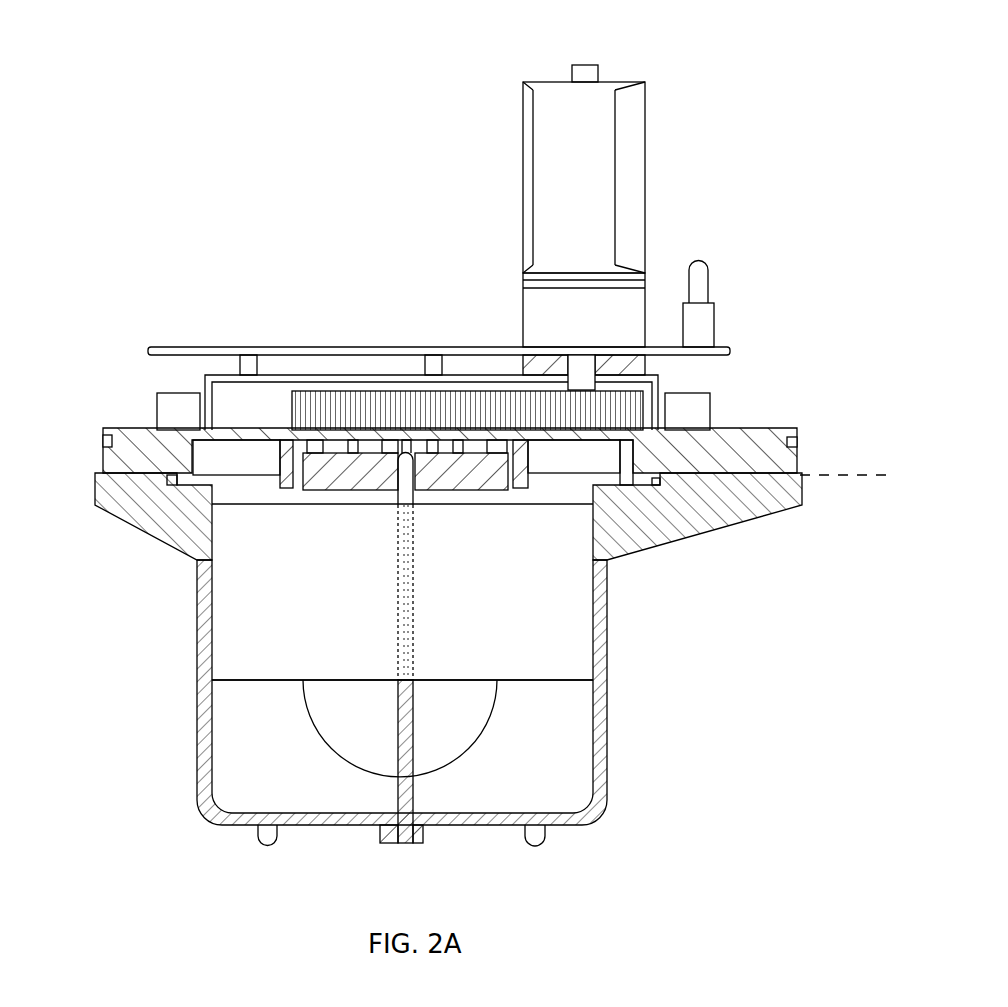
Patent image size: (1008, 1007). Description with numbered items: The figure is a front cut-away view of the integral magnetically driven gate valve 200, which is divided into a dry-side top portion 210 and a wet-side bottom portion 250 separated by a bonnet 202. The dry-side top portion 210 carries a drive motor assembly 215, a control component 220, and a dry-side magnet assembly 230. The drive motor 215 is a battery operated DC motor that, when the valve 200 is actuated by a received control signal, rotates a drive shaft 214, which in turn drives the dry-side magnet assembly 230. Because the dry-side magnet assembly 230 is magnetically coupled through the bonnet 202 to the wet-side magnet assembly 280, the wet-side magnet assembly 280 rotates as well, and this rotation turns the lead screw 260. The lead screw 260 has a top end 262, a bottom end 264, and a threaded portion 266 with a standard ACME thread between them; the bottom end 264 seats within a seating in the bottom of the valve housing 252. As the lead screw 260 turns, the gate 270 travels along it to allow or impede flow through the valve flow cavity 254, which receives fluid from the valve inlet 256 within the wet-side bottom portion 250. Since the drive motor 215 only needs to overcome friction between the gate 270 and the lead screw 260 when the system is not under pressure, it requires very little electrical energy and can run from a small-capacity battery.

The magnetically driven gate valve 200 is at (247, 76).
The drive motor assembly 215 is at (657, 102).
The dry-side magnet assembly 230 is at (423, 402).
The control component 220 is at (722, 348).
The drive shaft 214 is at (587, 371).
The bonnet 202 is at (103, 458).
The dry-side top portion 210 is at (885, 458).
The wet-side bottom portion 250 is at (885, 512).
The top end 262 is at (410, 470).
The wet-side magnet assembly 280 is at (480, 488).
The threaded portion 266 is at (397, 560).
The lead screw 260 is at (397, 610).
The gate 270 is at (529, 621).
The valve inlet 256 is at (384, 722).
The valve flow cavity 254 is at (542, 760).
The bottom end 264 is at (393, 823).
The valve housing 252 is at (600, 810).